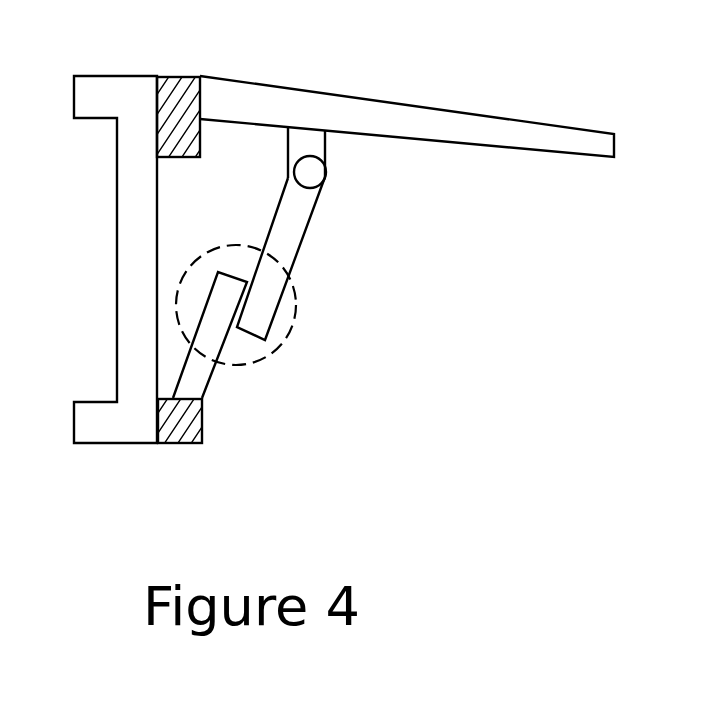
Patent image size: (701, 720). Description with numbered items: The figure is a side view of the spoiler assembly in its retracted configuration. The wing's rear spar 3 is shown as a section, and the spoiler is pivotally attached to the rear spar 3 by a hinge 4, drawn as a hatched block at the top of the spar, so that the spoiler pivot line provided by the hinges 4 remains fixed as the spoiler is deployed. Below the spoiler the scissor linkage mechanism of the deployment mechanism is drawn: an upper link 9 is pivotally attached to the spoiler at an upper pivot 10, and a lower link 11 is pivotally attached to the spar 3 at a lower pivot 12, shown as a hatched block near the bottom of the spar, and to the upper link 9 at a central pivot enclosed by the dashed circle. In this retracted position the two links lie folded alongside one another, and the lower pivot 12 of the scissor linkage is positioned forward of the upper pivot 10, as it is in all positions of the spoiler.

The rear spar 3 is at (117, 283).
The hinge 4 is at (176, 76).
The upper link 9 is at (300, 242).
The upper pivot 10 is at (316, 182).
The lower link 11 is at (200, 383).
The lower pivot 12 is at (173, 445).